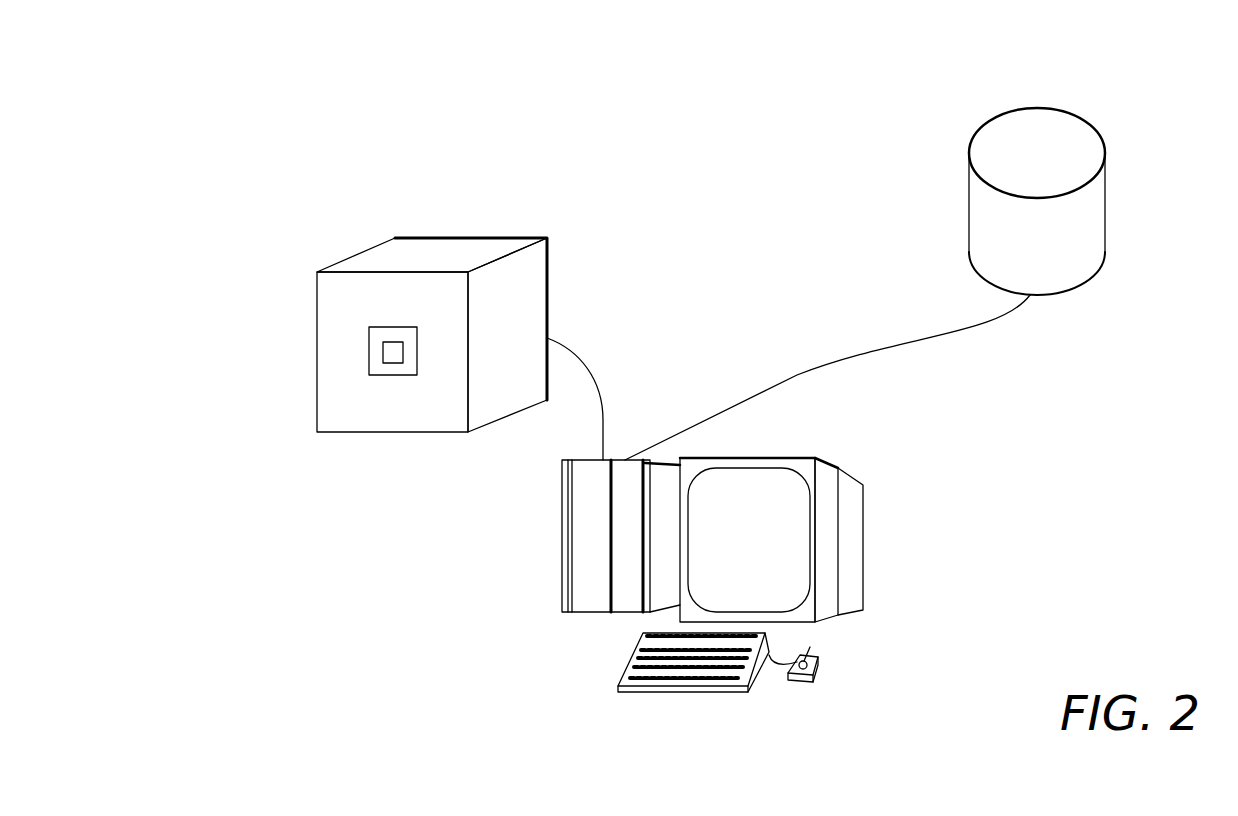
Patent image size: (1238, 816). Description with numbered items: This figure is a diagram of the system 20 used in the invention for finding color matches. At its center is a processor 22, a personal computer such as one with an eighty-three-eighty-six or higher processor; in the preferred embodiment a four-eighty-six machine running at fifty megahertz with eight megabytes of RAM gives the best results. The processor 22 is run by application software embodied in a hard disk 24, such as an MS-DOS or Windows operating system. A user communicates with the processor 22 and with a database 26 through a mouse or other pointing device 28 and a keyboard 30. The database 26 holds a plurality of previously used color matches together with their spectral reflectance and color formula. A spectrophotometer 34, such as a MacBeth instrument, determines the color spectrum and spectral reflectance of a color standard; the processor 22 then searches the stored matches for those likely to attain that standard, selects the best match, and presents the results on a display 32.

The system 20 is at (720, 162).
The processor 22 is at (947, 530).
The hard disk 24 is at (562, 537).
The database 26 is at (1034, 108).
The pointing device 28 is at (818, 666).
The keyboard 30 is at (629, 662).
The display 32 is at (805, 465).
The spectrophotometer 34 is at (335, 263).